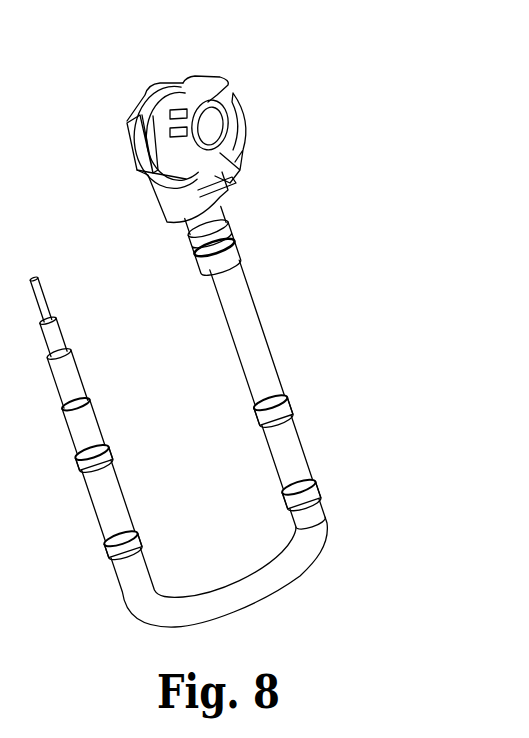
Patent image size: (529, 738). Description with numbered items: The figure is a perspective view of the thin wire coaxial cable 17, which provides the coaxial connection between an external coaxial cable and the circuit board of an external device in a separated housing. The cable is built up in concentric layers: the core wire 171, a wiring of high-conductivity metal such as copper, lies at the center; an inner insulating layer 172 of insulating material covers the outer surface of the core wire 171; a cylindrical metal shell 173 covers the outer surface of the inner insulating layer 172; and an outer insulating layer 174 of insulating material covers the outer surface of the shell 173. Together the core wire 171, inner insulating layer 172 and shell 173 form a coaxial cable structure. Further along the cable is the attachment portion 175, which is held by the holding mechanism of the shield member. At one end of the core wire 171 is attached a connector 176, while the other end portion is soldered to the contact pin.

The thin wire coaxial cable 17 is at (413, 103).
The core wire 171 is at (43, 290).
The inner insulating layer 172 is at (52, 337).
The shell 173 is at (68, 382).
The outer insulating layer 174 is at (90, 428).
The attachment portion 175 is at (113, 502).
The connector 176 is at (225, 59).